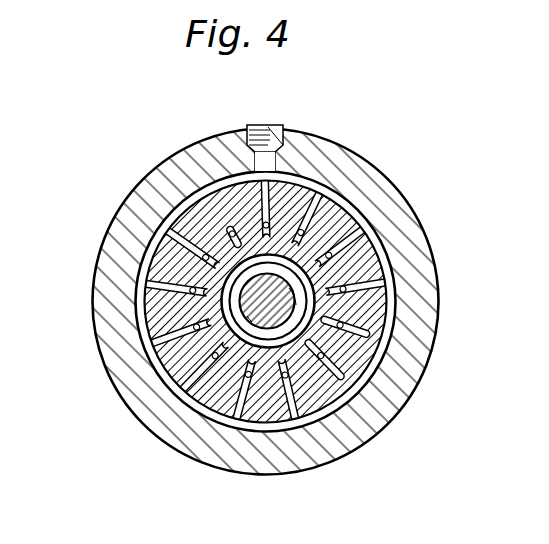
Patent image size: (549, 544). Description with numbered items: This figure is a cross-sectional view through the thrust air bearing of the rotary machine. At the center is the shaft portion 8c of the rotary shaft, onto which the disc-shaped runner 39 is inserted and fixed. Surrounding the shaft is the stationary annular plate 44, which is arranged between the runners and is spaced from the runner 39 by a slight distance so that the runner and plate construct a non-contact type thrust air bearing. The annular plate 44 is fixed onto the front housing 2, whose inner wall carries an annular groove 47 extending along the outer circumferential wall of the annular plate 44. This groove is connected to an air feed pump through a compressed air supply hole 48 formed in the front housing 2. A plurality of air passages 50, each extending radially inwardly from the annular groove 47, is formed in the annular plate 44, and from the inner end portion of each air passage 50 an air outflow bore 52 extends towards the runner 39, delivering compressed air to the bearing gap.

The front housing 2 is at (397, 383).
The stationary annular plate 44 is at (376, 266).
The annular groove 47 is at (368, 206).
The compressed air supply hole 48 is at (262, 128).
The air passage 50 is at (262, 225).
The air outflow bore 52 is at (231, 229).
The disc-shaped runner 39 is at (296, 301).
The shaft portion 8c is at (248, 322).